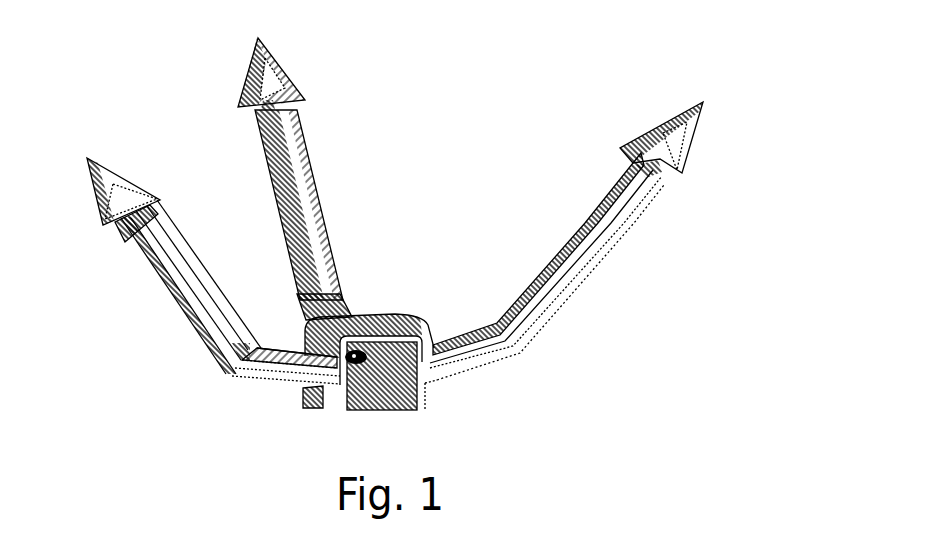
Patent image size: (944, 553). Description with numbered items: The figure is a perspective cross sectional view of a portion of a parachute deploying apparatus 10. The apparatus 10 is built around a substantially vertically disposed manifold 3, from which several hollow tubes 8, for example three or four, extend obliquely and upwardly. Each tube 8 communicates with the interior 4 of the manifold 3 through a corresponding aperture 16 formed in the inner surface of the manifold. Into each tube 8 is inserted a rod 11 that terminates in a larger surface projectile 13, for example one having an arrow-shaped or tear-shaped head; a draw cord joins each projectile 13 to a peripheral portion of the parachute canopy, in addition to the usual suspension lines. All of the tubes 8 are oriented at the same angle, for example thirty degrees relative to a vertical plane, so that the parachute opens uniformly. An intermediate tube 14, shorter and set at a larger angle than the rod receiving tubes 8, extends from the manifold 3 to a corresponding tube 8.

The apparatus 10 is at (552, 78).
The hollow tube 8 is at (305, 165).
The manifold 3 is at (400, 318).
The interior 4 is at (390, 395).
The rod 11 is at (617, 210).
The projectile 13 is at (690, 148).
The intermediate tube 14 is at (453, 365).
The aperture 16 is at (358, 362).